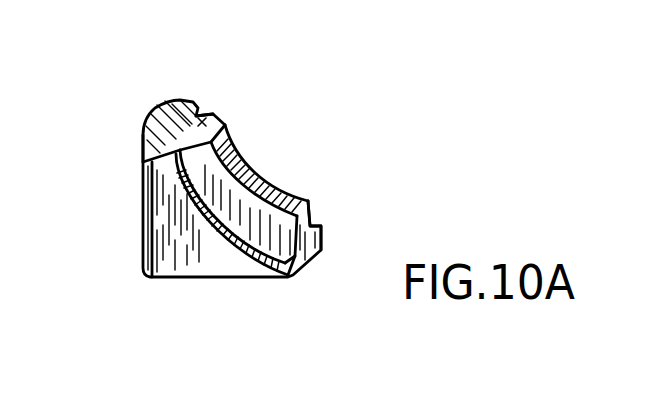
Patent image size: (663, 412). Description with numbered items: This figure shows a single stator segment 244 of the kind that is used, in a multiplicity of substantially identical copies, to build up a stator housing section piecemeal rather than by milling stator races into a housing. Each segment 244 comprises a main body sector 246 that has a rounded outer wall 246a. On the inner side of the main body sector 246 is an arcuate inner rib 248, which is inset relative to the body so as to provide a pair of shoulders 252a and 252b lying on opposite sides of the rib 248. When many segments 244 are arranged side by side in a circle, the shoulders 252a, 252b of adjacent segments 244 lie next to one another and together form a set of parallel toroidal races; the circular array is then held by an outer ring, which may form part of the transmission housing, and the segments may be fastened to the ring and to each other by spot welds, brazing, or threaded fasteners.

The stator segment 244 is at (280, 146).
The main body sector 246 is at (150, 218).
The rounded outer wall 246a is at (147, 183).
The arcuate inner rib 248 is at (203, 122).
The shoulder 252a is at (280, 278).
The shoulder 252b is at (313, 228).